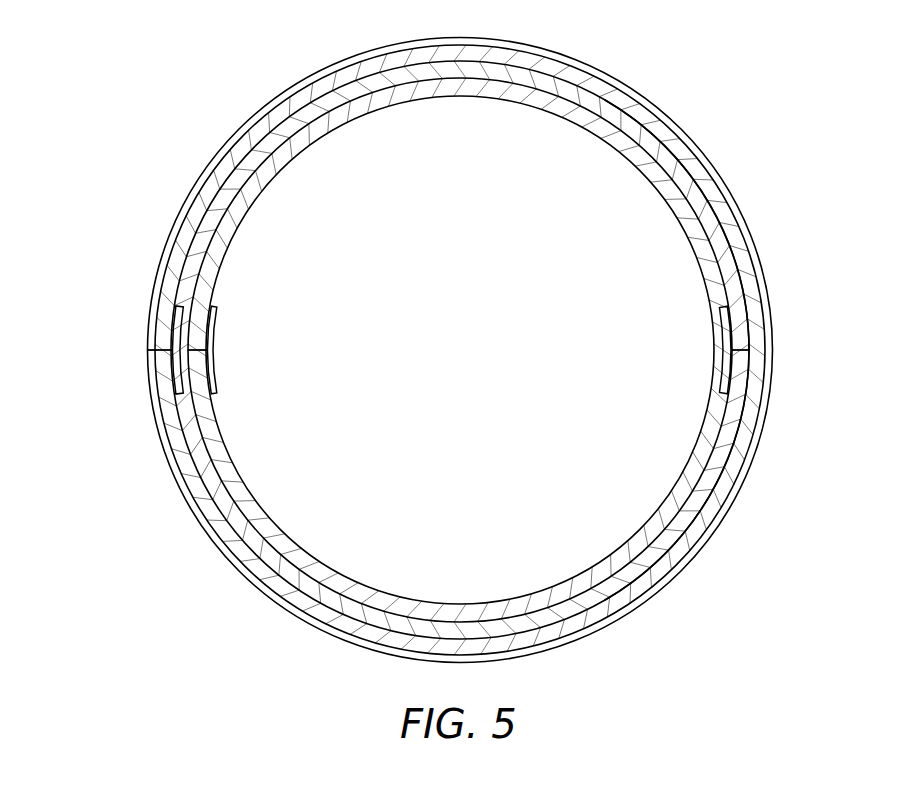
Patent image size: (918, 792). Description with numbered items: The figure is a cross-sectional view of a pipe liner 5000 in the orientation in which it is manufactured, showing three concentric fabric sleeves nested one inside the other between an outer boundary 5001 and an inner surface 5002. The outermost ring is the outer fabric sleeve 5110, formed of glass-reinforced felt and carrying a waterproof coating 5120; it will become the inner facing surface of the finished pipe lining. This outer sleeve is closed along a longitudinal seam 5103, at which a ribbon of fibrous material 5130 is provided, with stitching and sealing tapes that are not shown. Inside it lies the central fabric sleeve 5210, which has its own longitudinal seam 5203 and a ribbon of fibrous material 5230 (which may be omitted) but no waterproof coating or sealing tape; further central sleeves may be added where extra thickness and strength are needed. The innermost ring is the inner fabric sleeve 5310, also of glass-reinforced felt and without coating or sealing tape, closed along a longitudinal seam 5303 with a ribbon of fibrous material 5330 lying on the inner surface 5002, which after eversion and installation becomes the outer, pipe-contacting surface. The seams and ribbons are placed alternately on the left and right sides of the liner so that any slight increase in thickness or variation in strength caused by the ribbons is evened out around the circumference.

The pipe liner 5000 is at (772, 118).
The outer surface 5001 is at (278, 93).
The inner surface 5002 is at (329, 133).
The outer fabric sleeve 5110 is at (208, 192).
The waterproof coating 5120 is at (173, 236).
The ribbon of fibrous material 5130 is at (172, 333).
The longitudinal seam 5103 is at (148, 362).
The inner fabric sleeve 5310 is at (222, 248).
The ribbon of fibrous material 5330 is at (213, 332).
The longitudinal seam 5303 is at (200, 356).
The central fabric sleeve 5210 is at (752, 372).
The ribbon of fibrous material 5230 is at (722, 325).
The longitudinal seam 5203 is at (747, 348).